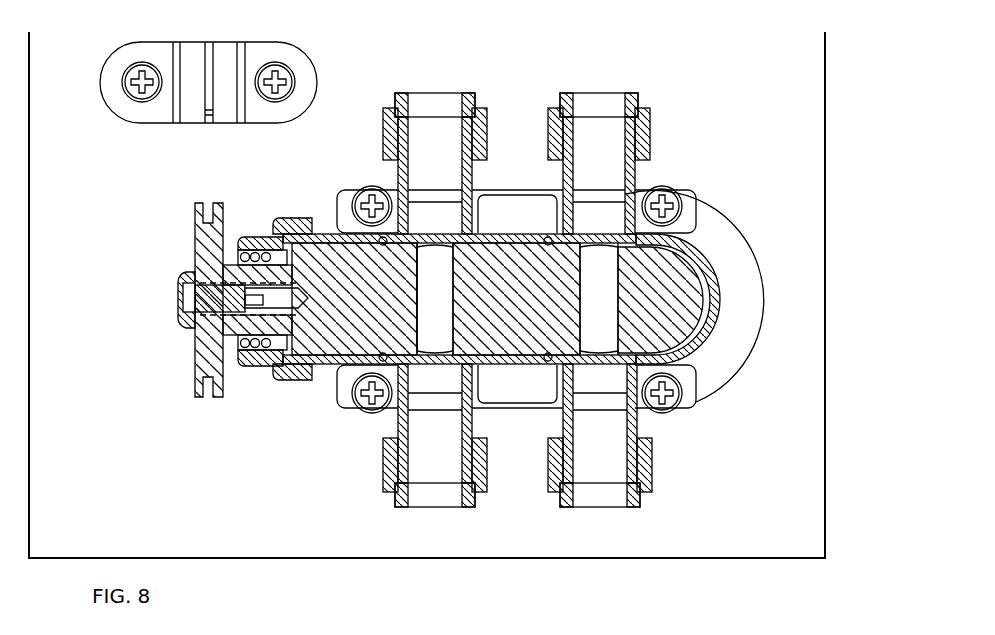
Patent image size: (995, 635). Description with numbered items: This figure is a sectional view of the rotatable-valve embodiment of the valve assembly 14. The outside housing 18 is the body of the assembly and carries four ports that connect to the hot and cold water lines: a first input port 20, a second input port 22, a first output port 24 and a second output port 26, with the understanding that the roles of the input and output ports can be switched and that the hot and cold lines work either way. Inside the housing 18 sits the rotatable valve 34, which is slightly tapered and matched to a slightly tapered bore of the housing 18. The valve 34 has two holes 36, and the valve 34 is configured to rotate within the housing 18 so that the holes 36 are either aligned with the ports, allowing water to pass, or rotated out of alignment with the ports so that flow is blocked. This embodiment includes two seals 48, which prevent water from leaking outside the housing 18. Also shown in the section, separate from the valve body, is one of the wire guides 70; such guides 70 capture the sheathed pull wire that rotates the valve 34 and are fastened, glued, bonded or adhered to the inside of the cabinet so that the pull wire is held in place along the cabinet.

The valve assembly 14 is at (712, 63).
The outside housing 18 is at (688, 252).
The first input port 20 is at (428, 447).
The second input port 22 is at (610, 457).
The first output port 24 is at (617, 162).
The second output port 26 is at (450, 143).
The rotatable valve 34 is at (670, 307).
The holes 36 is at (670, 357).
The seals 48 is at (383, 241).
The wire guides 70 is at (262, 58).